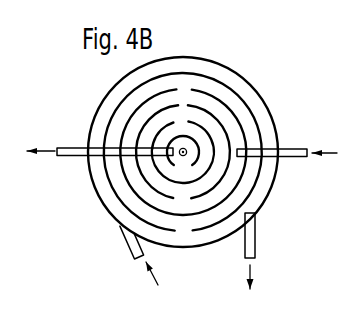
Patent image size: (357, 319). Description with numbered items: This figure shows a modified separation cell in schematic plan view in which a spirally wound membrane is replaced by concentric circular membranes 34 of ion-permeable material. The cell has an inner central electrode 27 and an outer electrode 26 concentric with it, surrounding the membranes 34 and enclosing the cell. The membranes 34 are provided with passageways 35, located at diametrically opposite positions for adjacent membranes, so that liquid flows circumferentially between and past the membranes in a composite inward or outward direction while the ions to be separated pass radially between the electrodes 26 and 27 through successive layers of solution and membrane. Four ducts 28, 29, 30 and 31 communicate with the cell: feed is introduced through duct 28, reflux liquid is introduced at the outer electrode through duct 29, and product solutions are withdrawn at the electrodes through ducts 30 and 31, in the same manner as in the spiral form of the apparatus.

The outer electrode 26 is at (93, 188).
The inner central electrode 27 is at (178, 149).
The duct 28 is at (287, 149).
The duct 29 is at (128, 245).
The duct 30 is at (255, 249).
The duct 31 is at (70, 148).
The concentric circular membranes 34 is at (240, 120).
The passageways 35 is at (188, 117).